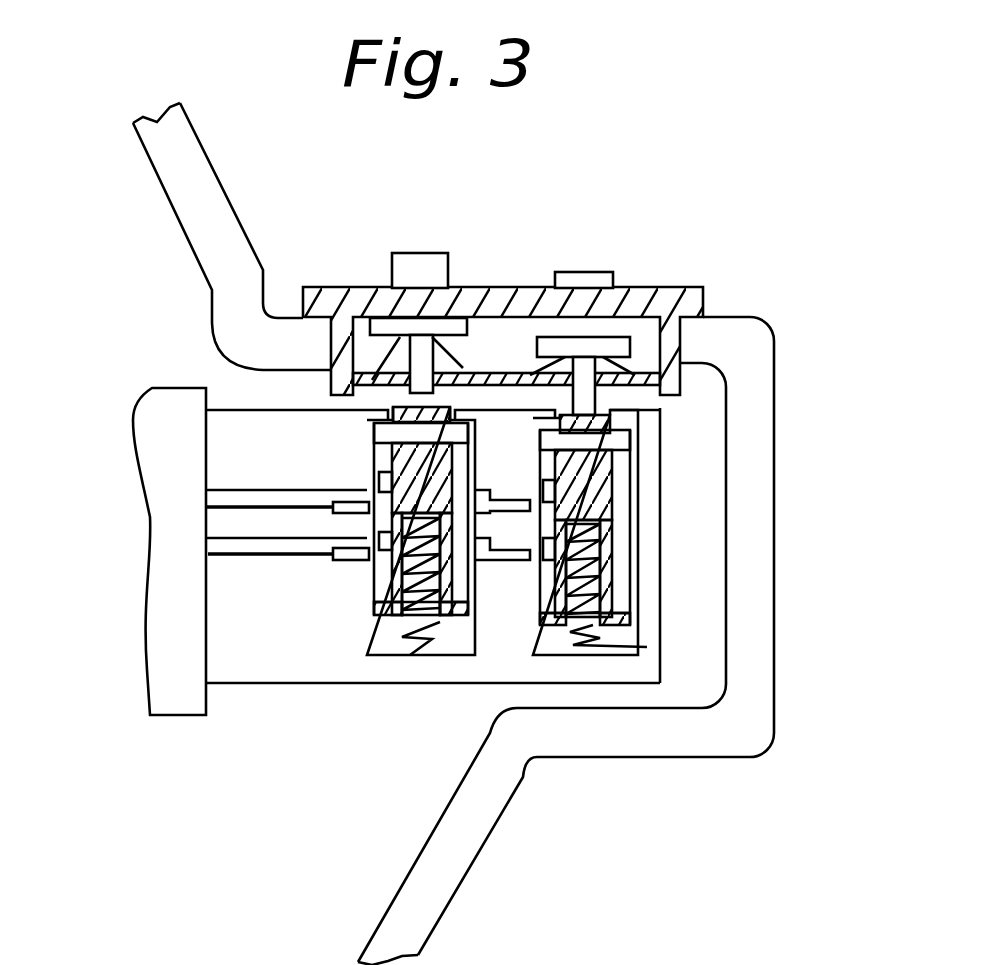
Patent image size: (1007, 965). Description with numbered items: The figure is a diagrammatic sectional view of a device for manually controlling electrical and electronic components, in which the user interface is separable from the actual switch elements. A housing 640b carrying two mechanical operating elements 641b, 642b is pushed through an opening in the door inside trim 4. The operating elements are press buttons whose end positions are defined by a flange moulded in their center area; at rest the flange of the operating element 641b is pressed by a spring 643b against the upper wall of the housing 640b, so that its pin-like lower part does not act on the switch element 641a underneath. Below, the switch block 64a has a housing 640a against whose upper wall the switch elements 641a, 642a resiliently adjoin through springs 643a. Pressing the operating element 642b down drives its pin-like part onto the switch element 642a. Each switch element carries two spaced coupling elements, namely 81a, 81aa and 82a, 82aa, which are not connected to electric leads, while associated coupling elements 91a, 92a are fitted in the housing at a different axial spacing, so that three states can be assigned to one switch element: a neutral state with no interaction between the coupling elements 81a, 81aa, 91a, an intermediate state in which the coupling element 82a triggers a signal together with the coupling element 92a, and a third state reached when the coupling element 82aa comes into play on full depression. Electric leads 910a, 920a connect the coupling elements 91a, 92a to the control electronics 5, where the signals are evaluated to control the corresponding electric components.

The door inside trim 4 is at (749, 577).
The control electronics 5 is at (135, 568).
The switch block 64a is at (670, 686).
The housing of the switch block 640a is at (648, 526).
The housing 640b is at (325, 303).
The switch element 641a is at (404, 407).
The mechanical operating element 641b is at (402, 267).
The switch element 642a is at (603, 420).
The mechanical operating element 642b is at (587, 285).
The spring 643a is at (410, 655).
The spring 643b is at (540, 375).
The coupling element 81a is at (368, 578).
The coupling element 81aa is at (378, 480).
The coupling element 82a is at (538, 578).
The coupling element 82aa is at (555, 490).
The coupling element 91a is at (340, 513).
The coupling element 92a is at (515, 518).
The electric lead 910a is at (280, 505).
The electric lead 920a is at (228, 493).